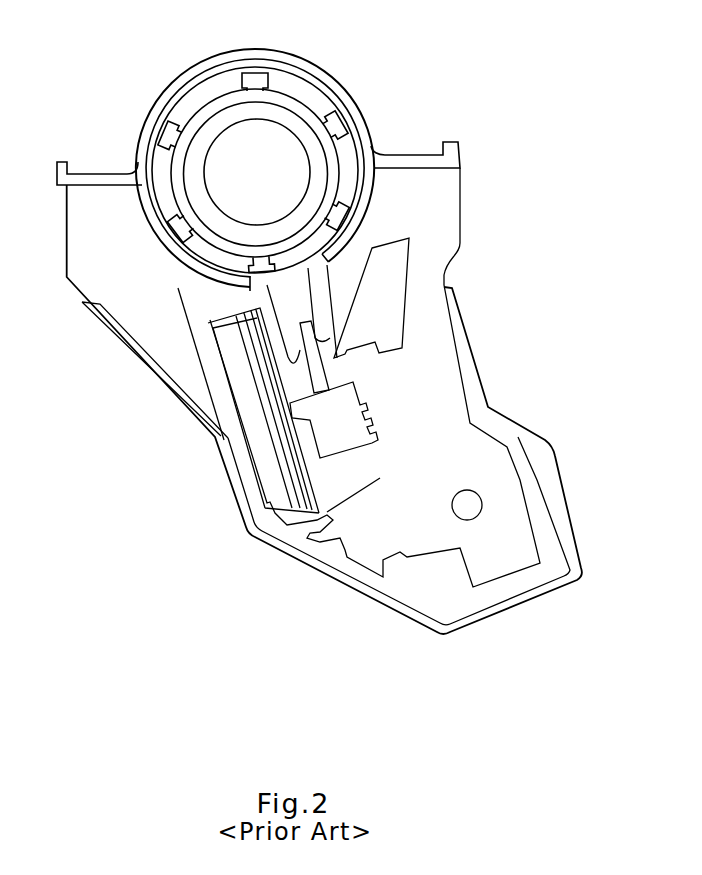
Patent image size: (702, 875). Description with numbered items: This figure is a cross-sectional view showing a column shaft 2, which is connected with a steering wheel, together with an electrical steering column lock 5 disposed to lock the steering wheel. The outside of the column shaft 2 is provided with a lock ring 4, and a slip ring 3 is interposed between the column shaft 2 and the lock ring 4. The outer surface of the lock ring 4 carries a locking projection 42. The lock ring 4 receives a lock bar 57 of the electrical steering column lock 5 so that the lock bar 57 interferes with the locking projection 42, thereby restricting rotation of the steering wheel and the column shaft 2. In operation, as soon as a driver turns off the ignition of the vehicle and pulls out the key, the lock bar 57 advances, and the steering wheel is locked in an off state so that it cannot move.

The column shaft 2 is at (222, 118).
The slip ring 3 is at (182, 153).
The lock ring 4 is at (282, 98).
The locking projection 42 is at (340, 213).
The electrical steering column lock 5 is at (432, 535).
The lock bar 57 is at (293, 307).